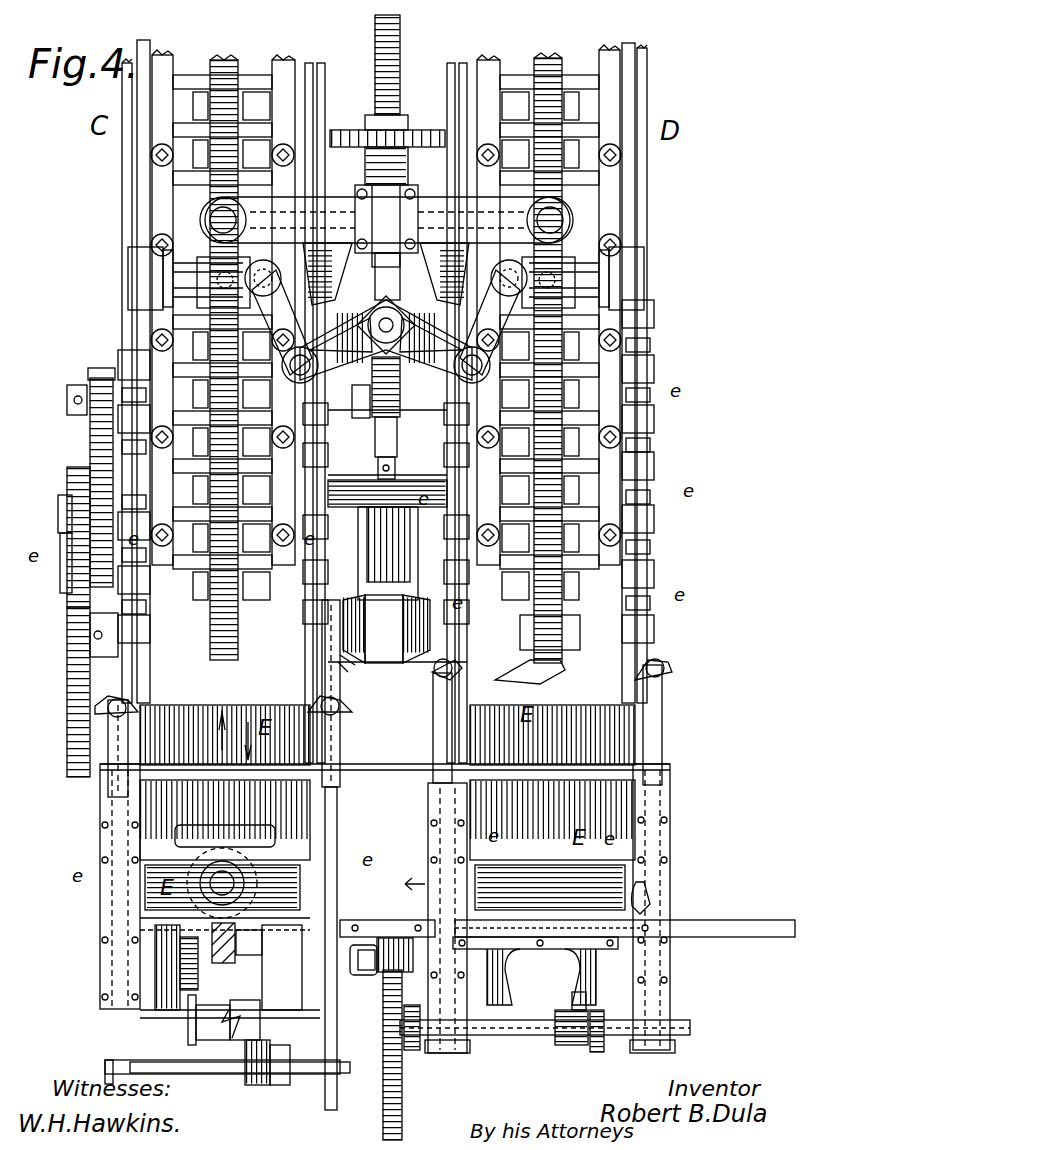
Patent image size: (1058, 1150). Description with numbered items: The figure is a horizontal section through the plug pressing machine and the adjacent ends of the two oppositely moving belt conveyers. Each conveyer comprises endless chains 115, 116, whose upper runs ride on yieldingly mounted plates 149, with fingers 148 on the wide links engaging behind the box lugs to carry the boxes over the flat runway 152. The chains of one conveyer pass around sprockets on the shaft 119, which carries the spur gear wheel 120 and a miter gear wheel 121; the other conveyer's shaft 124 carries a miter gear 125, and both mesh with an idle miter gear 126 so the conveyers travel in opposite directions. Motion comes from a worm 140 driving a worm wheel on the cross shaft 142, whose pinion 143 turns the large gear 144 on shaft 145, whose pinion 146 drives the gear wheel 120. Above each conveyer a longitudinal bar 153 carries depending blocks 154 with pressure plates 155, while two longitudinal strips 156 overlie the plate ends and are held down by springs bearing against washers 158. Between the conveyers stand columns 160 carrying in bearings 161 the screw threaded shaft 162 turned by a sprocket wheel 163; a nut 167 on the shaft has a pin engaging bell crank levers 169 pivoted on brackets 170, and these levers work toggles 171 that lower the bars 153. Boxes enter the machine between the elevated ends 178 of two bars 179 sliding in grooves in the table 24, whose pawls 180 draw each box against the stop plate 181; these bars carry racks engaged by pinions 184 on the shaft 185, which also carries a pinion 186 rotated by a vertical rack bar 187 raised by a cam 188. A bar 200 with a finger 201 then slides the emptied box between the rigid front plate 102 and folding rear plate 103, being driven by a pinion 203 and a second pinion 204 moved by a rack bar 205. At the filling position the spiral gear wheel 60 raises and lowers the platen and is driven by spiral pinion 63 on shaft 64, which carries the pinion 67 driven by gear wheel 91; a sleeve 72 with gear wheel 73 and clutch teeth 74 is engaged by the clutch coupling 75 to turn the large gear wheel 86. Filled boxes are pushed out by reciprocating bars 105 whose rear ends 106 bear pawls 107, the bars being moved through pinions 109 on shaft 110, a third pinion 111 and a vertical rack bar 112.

The horizontal screw threaded shaft 162 is at (398, 100).
The sprocket wheel 163 is at (365, 128).
The bearings 161 is at (410, 185).
The columns 160 is at (386, 220).
The bracket 170 is at (386, 309).
The nut 167 is at (372, 302).
The bell crank levers 169 is at (386, 350).
The toggle 171 is at (150, 278).
The plate 149 is at (128, 196).
The washers 158 is at (160, 340).
The endless chain 116 is at (130, 375).
The pinion 143 is at (95, 376).
The cross shaft 142 is at (340, 392).
The large gear 144 is at (90, 440).
The pinion 146 is at (72, 470).
The shaft 145 is at (65, 500).
The pressure plate 155 is at (130, 500).
The longitudinal strips 156 is at (70, 555).
The finger 148 is at (150, 585).
The spur gear wheel 120 is at (68, 640).
The spring actuated pawl 107 is at (110, 700).
The rear ends 106 is at (108, 755).
The blocks 154 is at (205, 416).
The longitudinal bar 153 is at (232, 395).
The endless chain 115 is at (445, 466).
The worm 140 is at (408, 434).
The idle miter gear 126 is at (416, 590).
The shaft 124 is at (386, 629).
The shaft 119 is at (370, 654).
The miter gear wheel 121 is at (361, 673).
The miter gear 125 is at (432, 670).
The spring controlled pawls 180 is at (640, 672).
The elevated ends 178 is at (452, 706).
The runway 152 is at (387, 735).
The bars 179 is at (452, 808).
The table 24 is at (670, 818).
The finger 201 is at (648, 880).
The stop plate 181 is at (650, 912).
The folding rear plate 103 is at (190, 852).
The spiral gear wheel 60 is at (256, 880).
The reciprocating bars 105 is at (340, 848).
The rigid front plate 102 is at (140, 920).
The pinion 67 is at (155, 945).
The gear wheel 91 is at (180, 975).
The pinion 109 is at (108, 1066).
The spiral pinion 63 is at (217, 954).
The horizontal shaft 64 is at (258, 955).
The horizontal shaft 110 is at (212, 1073).
The clutch coupling 75 is at (198, 1048).
The clutch teeth 74 is at (250, 1050).
The third pinion 111 is at (256, 1085).
The vertical rack bar 112 is at (282, 1086).
The sleeve 72 is at (358, 1080).
The large gear wheel 86 is at (402, 1116).
The gear wheel 73 is at (402, 1062).
The pinion 184 is at (440, 1052).
The shaft 185 is at (530, 1036).
The pinion 186 is at (572, 1046).
The vertical rack bar 187 is at (572, 1000).
The cam 188 is at (600, 1052).
The bar 200 is at (505, 940).
The pinion 203 is at (355, 920).
The vertical rack bar 205 is at (366, 972).
The second pinion 204 is at (410, 974).